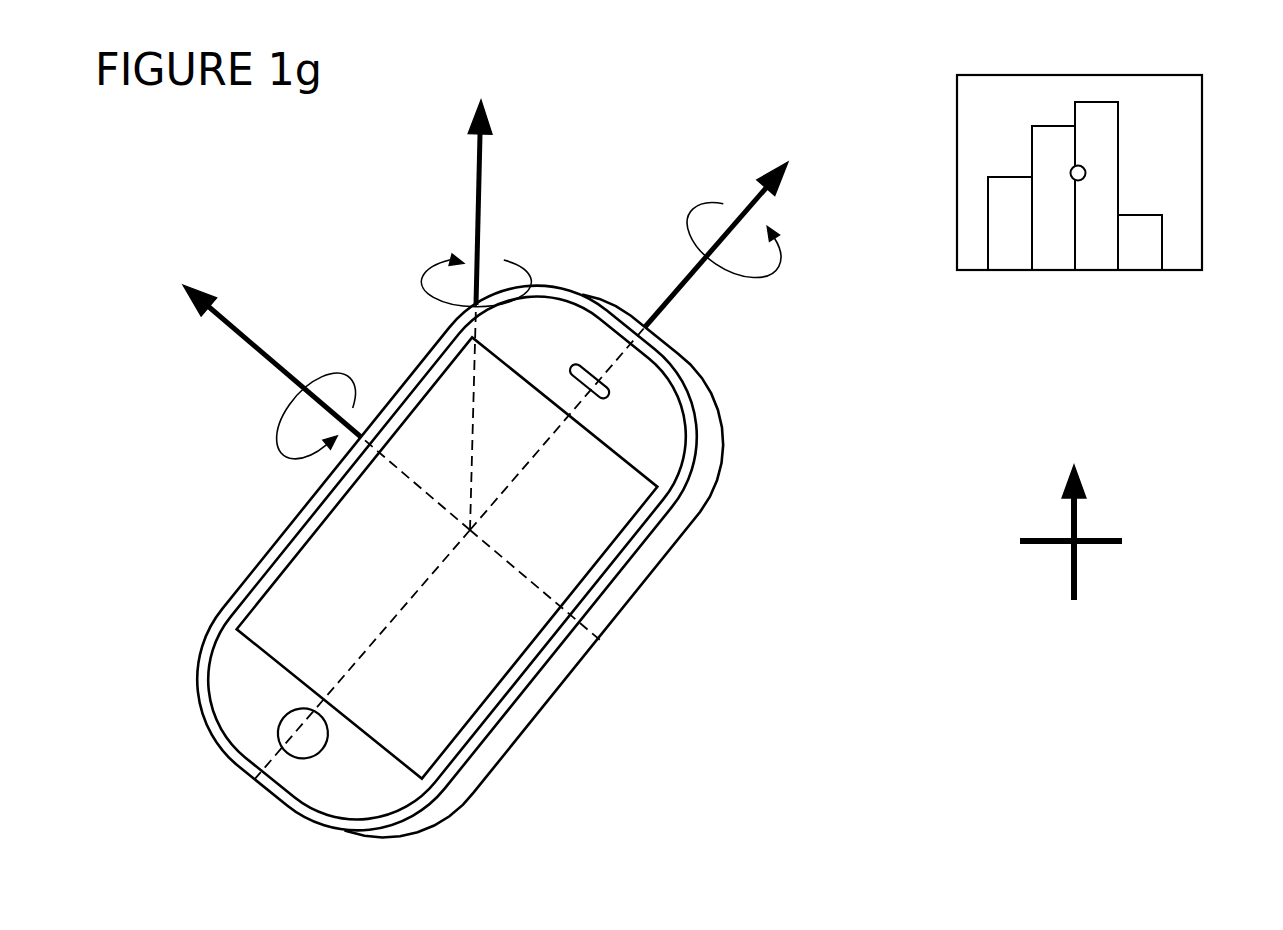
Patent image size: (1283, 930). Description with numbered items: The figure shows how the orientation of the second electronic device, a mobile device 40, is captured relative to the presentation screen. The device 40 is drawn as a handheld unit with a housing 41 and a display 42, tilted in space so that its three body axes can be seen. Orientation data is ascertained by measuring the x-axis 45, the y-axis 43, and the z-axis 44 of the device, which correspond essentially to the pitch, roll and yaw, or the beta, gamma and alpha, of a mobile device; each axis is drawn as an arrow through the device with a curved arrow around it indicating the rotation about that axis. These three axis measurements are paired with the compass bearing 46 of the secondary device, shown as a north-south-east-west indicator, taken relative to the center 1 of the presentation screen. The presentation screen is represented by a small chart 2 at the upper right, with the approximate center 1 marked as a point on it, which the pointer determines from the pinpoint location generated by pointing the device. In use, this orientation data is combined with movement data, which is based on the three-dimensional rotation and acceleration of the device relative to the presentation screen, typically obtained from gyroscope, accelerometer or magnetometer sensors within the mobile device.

The center of the presentation screen 1 is at (1085, 171).
The chart display 2 is at (1162, 75).
The mobile device 40 is at (600, 641).
The housing 41 is at (255, 789).
The display screen 42 is at (471, 486).
The y-axis 43 is at (670, 300).
The z-axis 44 is at (478, 140).
The x-axis 45 is at (262, 357).
The compass bearing 46 is at (1076, 538).